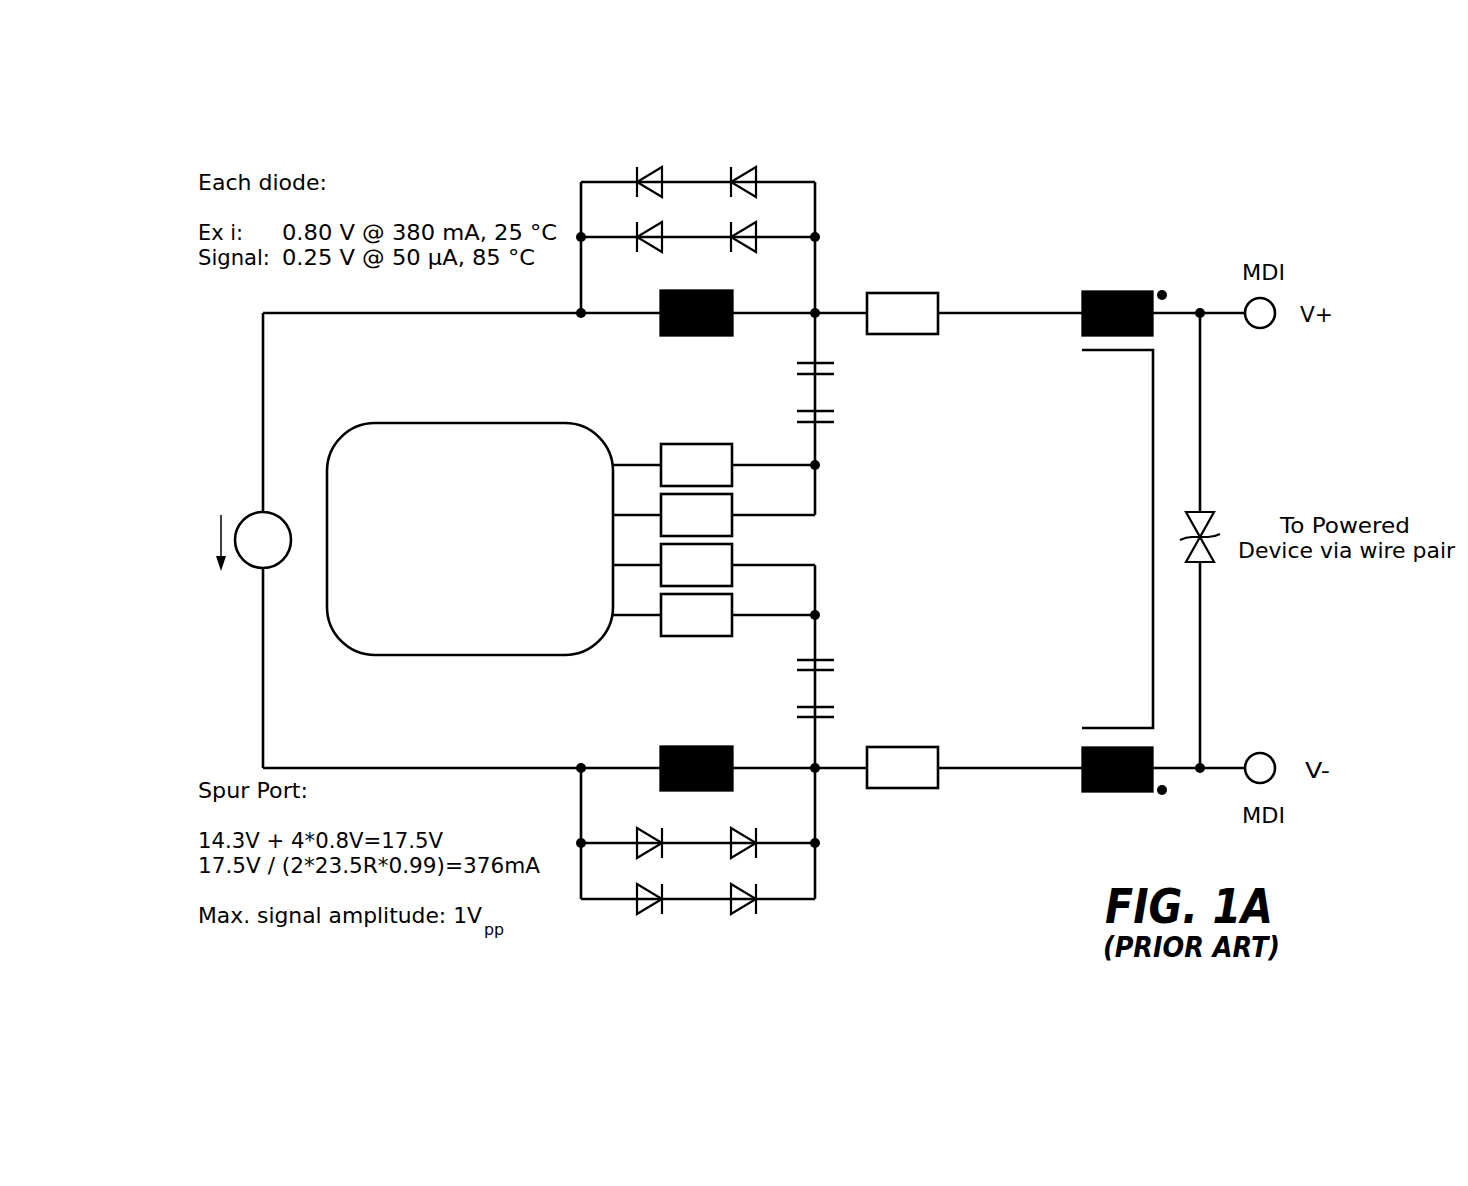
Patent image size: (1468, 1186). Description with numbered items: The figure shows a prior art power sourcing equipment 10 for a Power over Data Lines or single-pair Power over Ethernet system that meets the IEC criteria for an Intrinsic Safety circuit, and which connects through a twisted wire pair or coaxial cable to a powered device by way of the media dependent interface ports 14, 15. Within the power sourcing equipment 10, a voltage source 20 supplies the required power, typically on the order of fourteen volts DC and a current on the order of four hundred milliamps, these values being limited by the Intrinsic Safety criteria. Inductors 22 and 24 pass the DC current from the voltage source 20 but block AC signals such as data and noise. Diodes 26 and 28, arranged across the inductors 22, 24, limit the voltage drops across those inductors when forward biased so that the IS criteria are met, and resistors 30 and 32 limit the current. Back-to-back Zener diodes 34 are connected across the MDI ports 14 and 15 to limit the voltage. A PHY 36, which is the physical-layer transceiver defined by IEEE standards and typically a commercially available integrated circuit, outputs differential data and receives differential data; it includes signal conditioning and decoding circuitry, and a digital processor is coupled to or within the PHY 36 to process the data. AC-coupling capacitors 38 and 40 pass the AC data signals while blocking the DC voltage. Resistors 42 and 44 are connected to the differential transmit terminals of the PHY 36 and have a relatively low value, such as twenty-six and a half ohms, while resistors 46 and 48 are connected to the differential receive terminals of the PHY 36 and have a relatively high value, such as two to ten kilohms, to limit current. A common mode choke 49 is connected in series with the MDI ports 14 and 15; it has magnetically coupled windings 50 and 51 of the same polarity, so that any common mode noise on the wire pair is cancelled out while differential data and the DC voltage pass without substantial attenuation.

The power sourcing equipment 10 is at (1011, 212).
The media dependent interface port 14 is at (1262, 329).
The media dependent interface port 15 is at (1263, 753).
The voltage source 20 is at (256, 512).
The inductor 22 is at (658, 332).
The inductor 24 is at (658, 748).
The diodes 26 is at (831, 203).
The diodes 28 is at (833, 922).
The resistor 30 is at (940, 334).
The resistor 32 is at (940, 754).
The back-to-back Zener diodes 34 is at (1207, 565).
The PHY 36 is at (435, 422).
The AC-coupling capacitor 38 is at (823, 395).
The AC-coupling capacitor 40 is at (823, 688).
The resistor 42 is at (733, 448).
The resistor 44 is at (733, 627).
The resistor 46 is at (733, 503).
The resistor 48 is at (733, 558).
The common mode choke 49 is at (1128, 457).
The winding 50 is at (1108, 290).
The winding 51 is at (1108, 793).